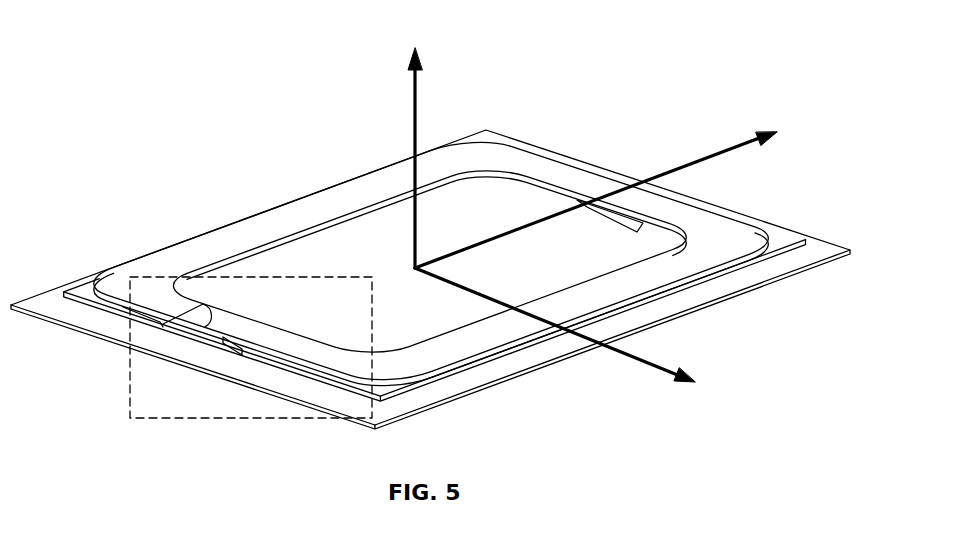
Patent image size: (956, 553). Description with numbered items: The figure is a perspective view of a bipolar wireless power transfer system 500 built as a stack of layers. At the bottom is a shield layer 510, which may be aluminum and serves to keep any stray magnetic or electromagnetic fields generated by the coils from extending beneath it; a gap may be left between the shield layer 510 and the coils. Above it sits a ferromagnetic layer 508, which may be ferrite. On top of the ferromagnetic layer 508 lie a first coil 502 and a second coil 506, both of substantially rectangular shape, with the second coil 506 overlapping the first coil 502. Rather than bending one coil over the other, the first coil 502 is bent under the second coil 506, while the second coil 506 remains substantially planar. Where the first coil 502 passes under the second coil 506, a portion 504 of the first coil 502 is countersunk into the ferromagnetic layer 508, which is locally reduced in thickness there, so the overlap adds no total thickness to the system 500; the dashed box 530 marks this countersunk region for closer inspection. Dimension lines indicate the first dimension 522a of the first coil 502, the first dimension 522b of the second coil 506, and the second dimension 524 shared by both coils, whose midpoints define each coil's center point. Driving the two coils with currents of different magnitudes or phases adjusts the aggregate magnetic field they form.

The bipolar wireless power transfer system 500 is at (218, 99).
The first coil 502 is at (213, 247).
The portion of the first coil 504 is at (187, 327).
The second coil 506 is at (745, 233).
The ferromagnetic layer 508 is at (87, 288).
The shield layer 510 is at (85, 317).
The first dimension of the first coil 522a is at (463, 138).
The first dimension of the second coil 522b is at (632, 157).
The second dimension 524 is at (383, 400).
The detail region 530 is at (216, 419).